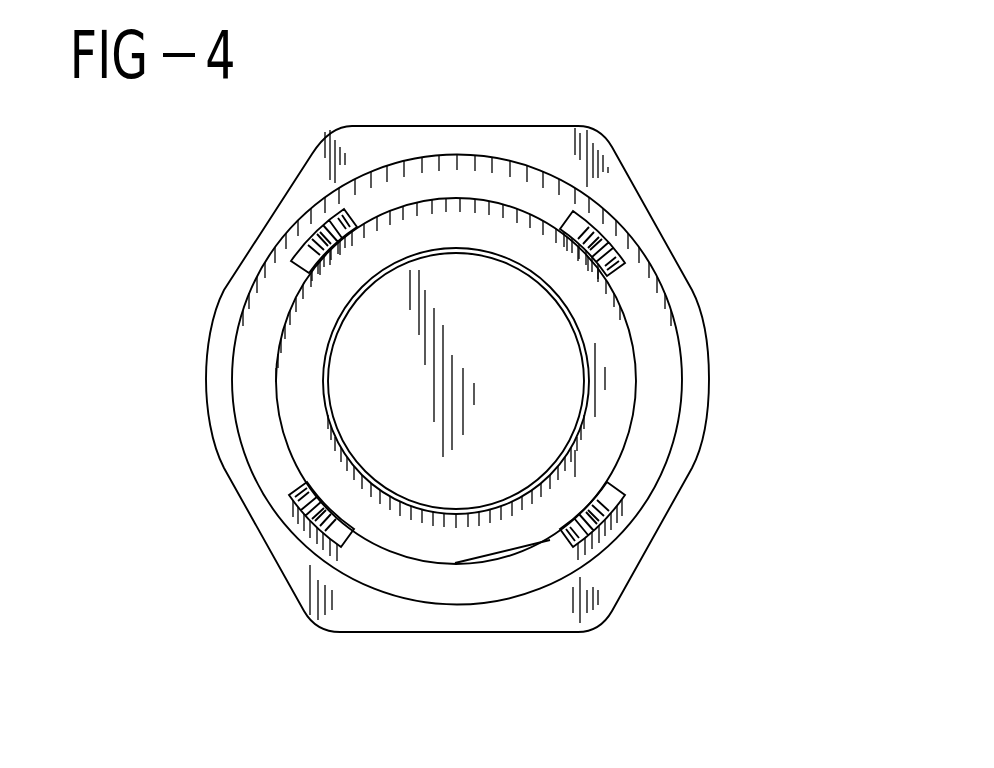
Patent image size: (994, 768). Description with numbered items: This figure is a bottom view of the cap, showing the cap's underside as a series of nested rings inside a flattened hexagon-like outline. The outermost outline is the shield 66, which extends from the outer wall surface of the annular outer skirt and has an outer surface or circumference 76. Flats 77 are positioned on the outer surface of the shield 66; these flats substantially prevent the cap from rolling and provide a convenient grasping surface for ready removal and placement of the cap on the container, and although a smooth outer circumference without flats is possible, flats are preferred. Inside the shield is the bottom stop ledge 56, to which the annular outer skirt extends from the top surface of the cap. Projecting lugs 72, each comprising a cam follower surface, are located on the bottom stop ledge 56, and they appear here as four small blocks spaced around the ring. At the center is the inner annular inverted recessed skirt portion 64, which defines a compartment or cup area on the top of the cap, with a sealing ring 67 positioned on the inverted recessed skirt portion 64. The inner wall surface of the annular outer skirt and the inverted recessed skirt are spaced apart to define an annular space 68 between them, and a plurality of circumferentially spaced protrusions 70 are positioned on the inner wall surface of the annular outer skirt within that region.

The flats 77 is at (578, 128).
The outer surface or circumference 76 is at (640, 197).
The shield 66 is at (677, 294).
The bottom stop ledge 56 is at (630, 488).
The annular space 68 is at (604, 456).
The sealing ring 67 is at (588, 350).
The inner annular inverted recessed skirt portion 64 is at (540, 378).
The projecting lugs 72 is at (612, 243).
The circumferentially spaced protrusions 70 is at (500, 557).